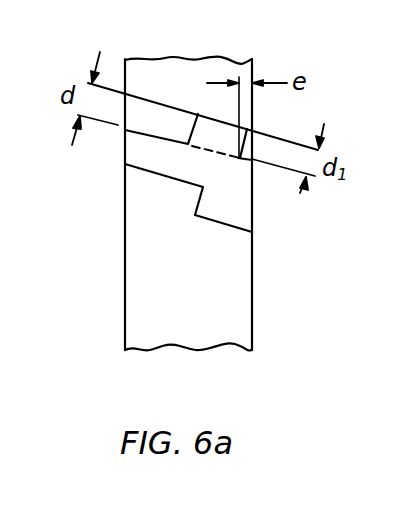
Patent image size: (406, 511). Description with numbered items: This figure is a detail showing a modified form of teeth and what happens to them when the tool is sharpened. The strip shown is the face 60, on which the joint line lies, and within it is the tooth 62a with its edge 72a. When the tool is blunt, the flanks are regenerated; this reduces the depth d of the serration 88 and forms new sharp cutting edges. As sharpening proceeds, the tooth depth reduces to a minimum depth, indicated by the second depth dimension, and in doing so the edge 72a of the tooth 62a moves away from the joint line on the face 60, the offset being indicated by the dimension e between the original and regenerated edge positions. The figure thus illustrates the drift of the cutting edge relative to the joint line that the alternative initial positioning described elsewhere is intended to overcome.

The face 60 is at (252, 323).
The tooth 62a is at (237, 214).
The edge 72a is at (252, 130).
The serration 88 is at (208, 128).